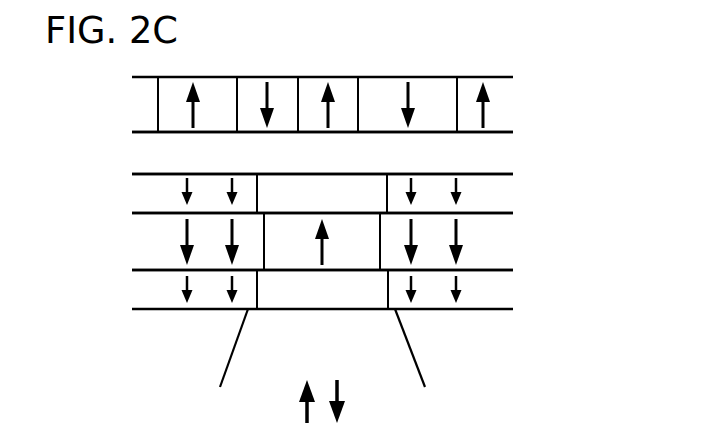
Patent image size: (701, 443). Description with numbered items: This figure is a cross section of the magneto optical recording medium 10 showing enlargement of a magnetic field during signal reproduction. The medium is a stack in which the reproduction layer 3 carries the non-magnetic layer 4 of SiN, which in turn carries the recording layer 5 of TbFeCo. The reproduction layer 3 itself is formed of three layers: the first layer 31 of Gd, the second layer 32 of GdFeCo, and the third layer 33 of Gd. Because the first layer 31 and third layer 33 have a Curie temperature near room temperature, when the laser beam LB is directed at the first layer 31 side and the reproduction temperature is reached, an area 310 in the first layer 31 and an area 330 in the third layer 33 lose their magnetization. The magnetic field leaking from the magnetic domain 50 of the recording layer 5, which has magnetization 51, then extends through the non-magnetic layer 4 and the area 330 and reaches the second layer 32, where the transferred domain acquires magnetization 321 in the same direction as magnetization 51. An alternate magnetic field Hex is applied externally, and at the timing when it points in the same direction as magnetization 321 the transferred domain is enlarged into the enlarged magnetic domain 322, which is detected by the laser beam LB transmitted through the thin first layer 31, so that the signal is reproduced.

The magneto optical recording medium 10 is at (524, 71).
The recording layer 5 is at (507, 101).
The magnetic domain 50 is at (344, 88).
The magnetization 51 is at (322, 97).
The non-magnetic layer 4 is at (507, 154).
The reproduction layer 3 is at (584, 180).
The third layer 33 is at (507, 196).
The area where magnetization has disappeared 330 is at (345, 188).
The second layer 32 is at (507, 246).
The enlarged magnetic domain 322 is at (340, 262).
The magnetization 321 is at (317, 234).
The first layer 31 is at (507, 293).
The area where magnetization has disappeared 310 is at (296, 300).
The laser beam LB is at (410, 349).
The alternate magnetic field Hex is at (342, 405).